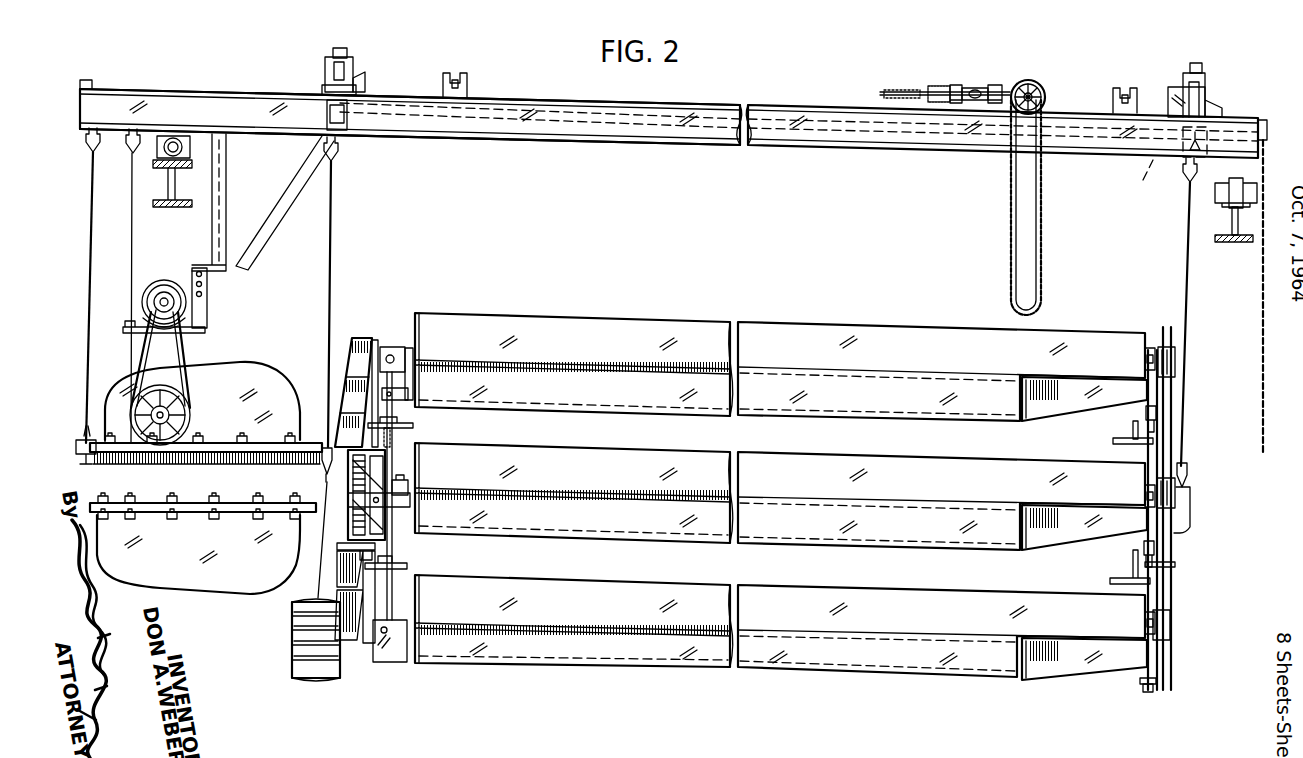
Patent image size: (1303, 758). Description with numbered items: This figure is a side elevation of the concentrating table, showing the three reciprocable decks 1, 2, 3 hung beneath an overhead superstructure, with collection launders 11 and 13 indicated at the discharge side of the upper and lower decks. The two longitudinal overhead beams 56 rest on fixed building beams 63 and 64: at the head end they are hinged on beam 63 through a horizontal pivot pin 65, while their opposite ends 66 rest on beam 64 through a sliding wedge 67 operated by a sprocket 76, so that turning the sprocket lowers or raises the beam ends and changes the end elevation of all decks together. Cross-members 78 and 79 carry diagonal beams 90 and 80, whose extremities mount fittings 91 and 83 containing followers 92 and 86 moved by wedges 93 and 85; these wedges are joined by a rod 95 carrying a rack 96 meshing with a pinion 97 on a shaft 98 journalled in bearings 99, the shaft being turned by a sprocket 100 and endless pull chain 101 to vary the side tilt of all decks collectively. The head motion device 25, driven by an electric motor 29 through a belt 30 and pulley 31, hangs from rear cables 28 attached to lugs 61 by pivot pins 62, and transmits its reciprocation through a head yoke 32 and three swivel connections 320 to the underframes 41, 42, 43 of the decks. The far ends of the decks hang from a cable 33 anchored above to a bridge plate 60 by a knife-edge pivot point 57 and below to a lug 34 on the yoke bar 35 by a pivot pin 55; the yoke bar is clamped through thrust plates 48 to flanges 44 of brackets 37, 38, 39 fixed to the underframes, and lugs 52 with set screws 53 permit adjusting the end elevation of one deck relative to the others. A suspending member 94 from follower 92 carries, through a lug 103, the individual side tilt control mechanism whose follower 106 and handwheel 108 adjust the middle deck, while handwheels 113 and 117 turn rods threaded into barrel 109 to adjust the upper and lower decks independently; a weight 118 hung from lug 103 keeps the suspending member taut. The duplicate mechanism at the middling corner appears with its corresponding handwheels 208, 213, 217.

The deck 1 is at (583, 358).
The deck 2 is at (551, 484).
The deck 3 is at (559, 617).
The collection launder 11 is at (392, 410).
The collection launder 13 is at (1263, 117).
The head motion device 25 is at (188, 550).
The cables 28 is at (92, 254).
The electric motor 29 is at (195, 309).
The belt 30 is at (184, 362).
The pulley 31 is at (192, 418).
The head yoke 32 is at (348, 385).
The cable 33 is at (1182, 268).
The lug 34 is at (1194, 506).
The yoke bar 35 is at (1172, 440).
The bracket 37 is at (1059, 426).
The bracket 38 is at (1064, 554).
The bracket 39 is at (1042, 686).
The underframe 41 is at (836, 416).
The underframe 42 is at (816, 540).
The underframe 43 is at (842, 672).
The flange 44 is at (1144, 359).
The thrust plate 48 is at (1174, 368).
The lug 52 is at (1138, 681).
The set screw 53 is at (1146, 692).
The pivot pin 55 is at (1192, 484).
The overhead beams 56 is at (632, 145).
The knife-edge pivot point 57 is at (1208, 132).
The bridge plate 60 is at (1143, 180).
The lugs 61 is at (94, 478).
The pivot pins 62 is at (78, 445).
The fixed beam 63 is at (160, 206).
The fixed beam 64 is at (1224, 242).
The horizontal pivot pin 65 is at (175, 136).
The ends of beams 66 is at (1262, 114).
The wedge 67 is at (1232, 186).
The sprocket 76 is at (1234, 214).
The cross-member 78 is at (468, 80).
The cross-member 79 is at (1120, 90).
The diagonal beam 80 is at (852, 148).
The tubular fitting 83 is at (1213, 90).
The wedge 85 is at (1170, 86).
The follower 86 is at (1204, 64).
The diagonal beam 90 is at (547, 118).
The fitting 91 is at (324, 62).
The follower 92 is at (338, 48).
The wedge 93 is at (364, 76).
The suspending member 94 is at (328, 290).
The rod 95 is at (670, 100).
The rack 96 is at (890, 92).
The pinion 97 is at (923, 86).
The shaft 98 is at (977, 88).
The bearings 99 is at (956, 84).
The sprocket 100 is at (1045, 92).
The endless pull chain 101 is at (1044, 224).
The lug 103 is at (316, 474).
The follower 106 is at (412, 508).
The handwheel 108 is at (348, 560).
The internally threaded barrel 109 is at (404, 484).
The handwheel 113 is at (414, 428).
The handwheel 117 is at (408, 574).
The weight 118 is at (292, 658).
The handwheel 208 is at (1175, 564).
The handwheel 213 is at (1114, 443).
The handwheel 217 is at (1114, 579).
The swivel connections 320 is at (394, 344).